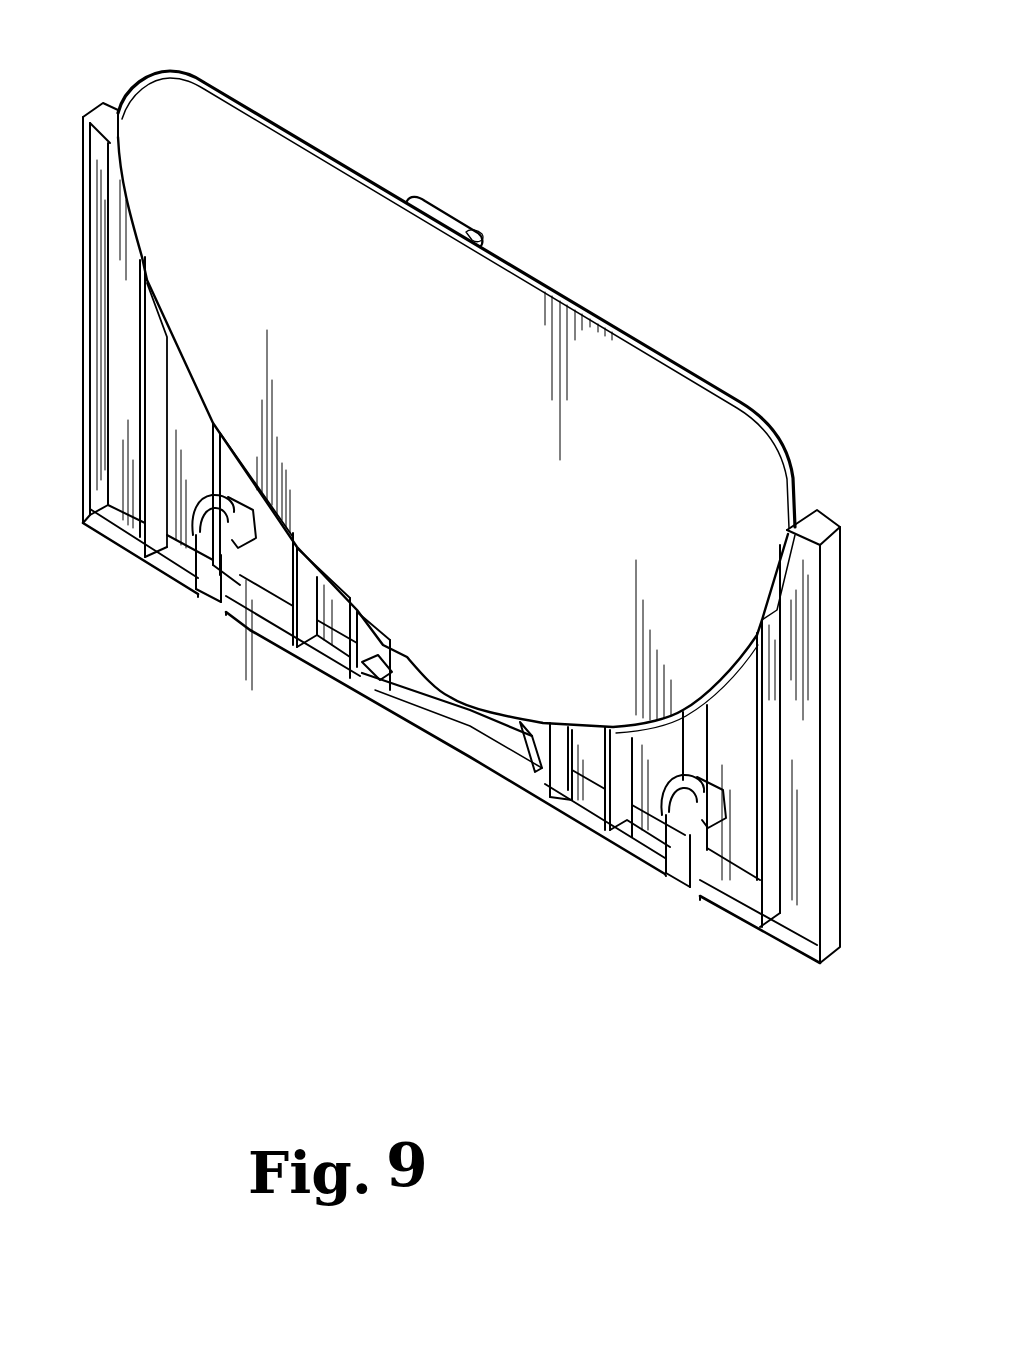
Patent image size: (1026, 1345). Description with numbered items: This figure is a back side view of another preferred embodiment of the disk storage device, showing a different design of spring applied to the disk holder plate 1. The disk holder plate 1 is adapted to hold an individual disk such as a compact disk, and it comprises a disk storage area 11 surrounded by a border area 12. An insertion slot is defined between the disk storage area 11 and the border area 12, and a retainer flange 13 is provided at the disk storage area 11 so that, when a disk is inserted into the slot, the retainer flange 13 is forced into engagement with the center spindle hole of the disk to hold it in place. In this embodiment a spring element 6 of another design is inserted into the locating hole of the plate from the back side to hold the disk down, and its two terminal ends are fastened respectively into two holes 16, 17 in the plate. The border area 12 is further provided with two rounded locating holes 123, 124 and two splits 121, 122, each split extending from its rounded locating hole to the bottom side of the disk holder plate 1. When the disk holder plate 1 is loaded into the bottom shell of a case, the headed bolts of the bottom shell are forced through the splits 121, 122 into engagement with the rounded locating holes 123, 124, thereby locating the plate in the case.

The disk holder plate 1 is at (97, 102).
The disk storage area 11 is at (281, 150).
The border area 12 is at (835, 667).
The retainer flange 13 is at (449, 203).
The split 121 is at (686, 888).
The split 122 is at (213, 612).
The rounded locating hole 123 is at (665, 820).
The rounded locating hole 124 is at (200, 540).
The spring element 6 is at (493, 762).
The hole 16 is at (540, 772).
The hole 17 is at (375, 670).